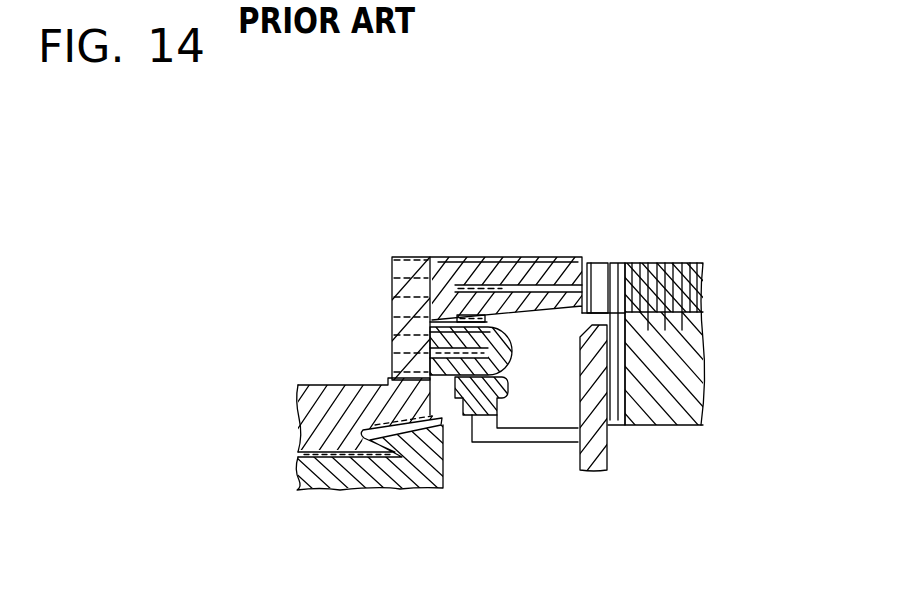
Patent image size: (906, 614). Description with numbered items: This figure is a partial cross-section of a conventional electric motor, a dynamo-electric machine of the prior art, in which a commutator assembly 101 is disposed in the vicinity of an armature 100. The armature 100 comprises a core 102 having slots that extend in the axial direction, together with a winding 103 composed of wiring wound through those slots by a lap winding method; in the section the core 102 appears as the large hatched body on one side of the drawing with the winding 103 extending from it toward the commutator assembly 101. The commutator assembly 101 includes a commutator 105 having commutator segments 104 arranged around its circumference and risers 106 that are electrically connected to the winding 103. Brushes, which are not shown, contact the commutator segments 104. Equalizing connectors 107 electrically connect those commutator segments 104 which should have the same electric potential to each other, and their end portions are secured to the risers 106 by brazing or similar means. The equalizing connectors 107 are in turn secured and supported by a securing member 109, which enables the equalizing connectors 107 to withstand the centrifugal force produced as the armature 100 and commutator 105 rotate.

The armature 100 is at (710, 253).
The commutator assembly 101 is at (347, 320).
The core 102 is at (651, 433).
The winding 103 is at (554, 257).
The commutator segments 104 is at (313, 384).
The commutator 105 is at (289, 428).
The risers 106 is at (392, 291).
The equalizing connectors 107 is at (445, 380).
The securing member 109 is at (527, 437).